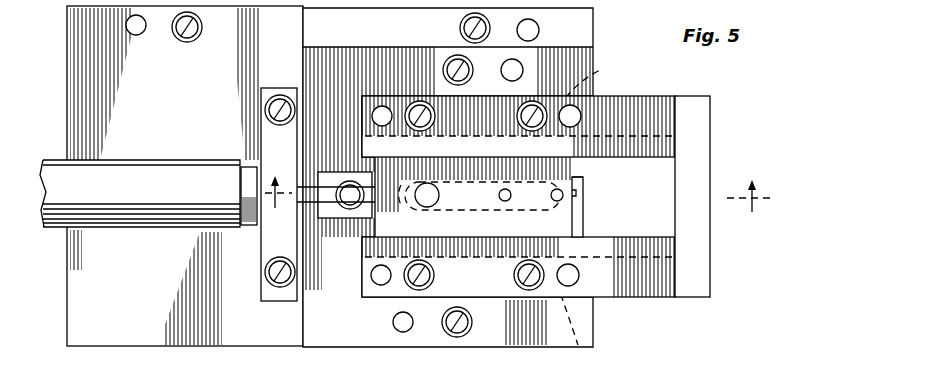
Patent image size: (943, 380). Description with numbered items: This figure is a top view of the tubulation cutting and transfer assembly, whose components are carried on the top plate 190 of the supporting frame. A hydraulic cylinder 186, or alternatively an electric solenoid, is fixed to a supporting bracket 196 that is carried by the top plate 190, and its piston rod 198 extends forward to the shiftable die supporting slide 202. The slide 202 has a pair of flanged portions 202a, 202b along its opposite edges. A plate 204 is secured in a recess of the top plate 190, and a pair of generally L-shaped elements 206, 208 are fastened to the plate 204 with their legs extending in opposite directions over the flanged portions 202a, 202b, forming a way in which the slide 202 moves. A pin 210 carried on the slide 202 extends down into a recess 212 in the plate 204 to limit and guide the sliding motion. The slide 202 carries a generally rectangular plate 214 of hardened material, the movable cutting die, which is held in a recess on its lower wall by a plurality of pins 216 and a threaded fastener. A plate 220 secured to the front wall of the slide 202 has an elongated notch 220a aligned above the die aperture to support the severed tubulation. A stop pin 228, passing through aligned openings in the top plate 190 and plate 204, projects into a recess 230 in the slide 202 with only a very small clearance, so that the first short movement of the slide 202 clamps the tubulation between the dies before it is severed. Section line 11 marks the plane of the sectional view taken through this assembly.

The section line 11 is at (525, 181).
The hydraulic cylinder 186 is at (57, 142).
The top plate 190 is at (110, 338).
The supporting bracket 196 is at (263, 296).
The piston rod 198 is at (313, 183).
The die supporting slide 202 is at (497, 228).
The flanged portion 202a is at (574, 308).
The flanged portion 202b is at (597, 100).
The plate 204 is at (693, 292).
The L-shaped element 206 is at (660, 105).
The L-shaped element 208 is at (617, 293).
The pin 210 is at (427, 207).
The recess 212 is at (406, 205).
The plate 214 is at (580, 178).
The pins 216 is at (557, 189).
The plate 220 is at (583, 222).
The notch 220a is at (583, 193).
The stop pin 228 is at (352, 215).
The recess 230 is at (350, 203).